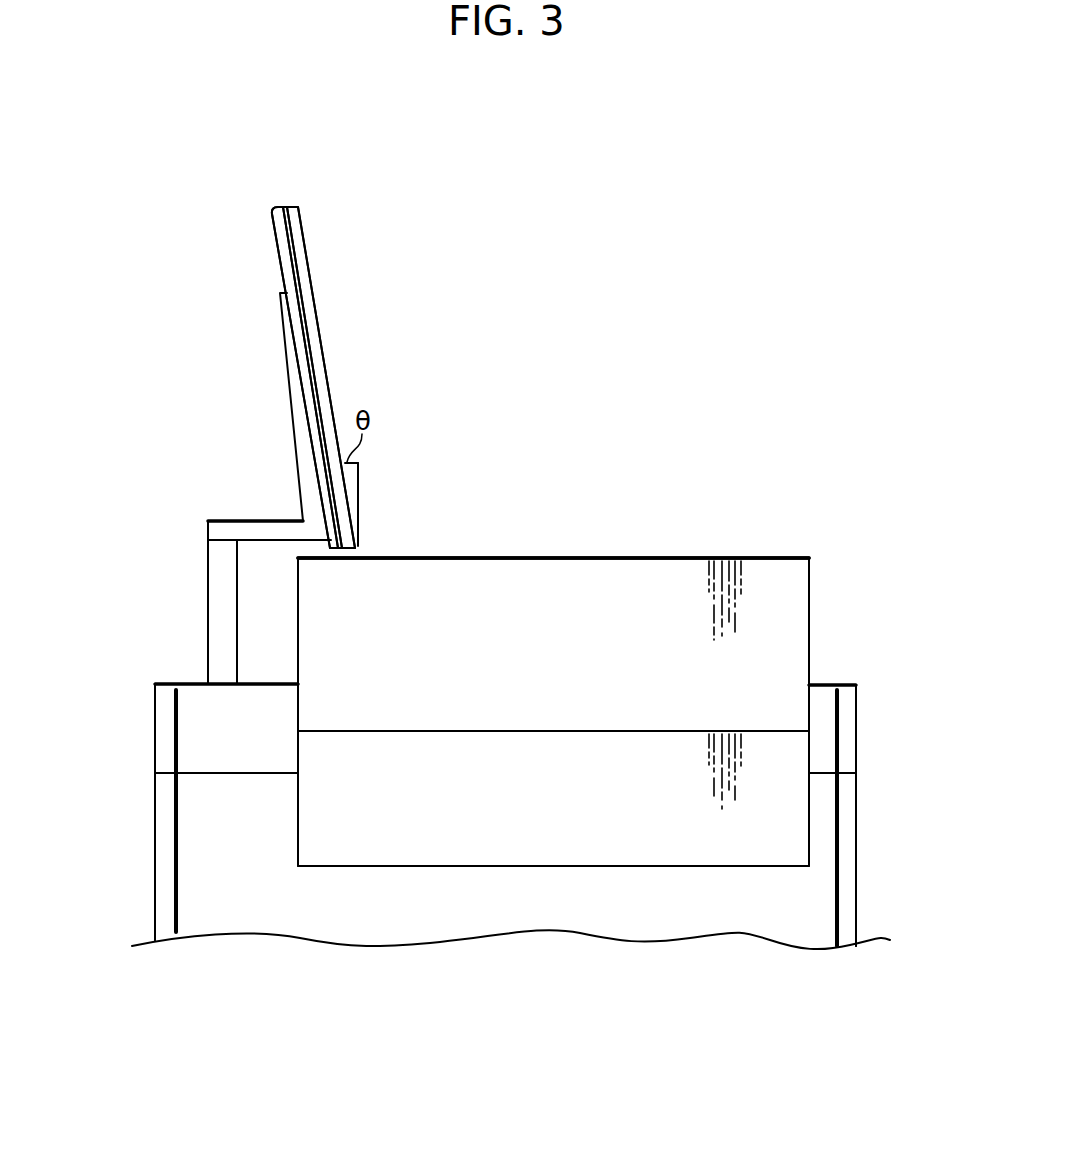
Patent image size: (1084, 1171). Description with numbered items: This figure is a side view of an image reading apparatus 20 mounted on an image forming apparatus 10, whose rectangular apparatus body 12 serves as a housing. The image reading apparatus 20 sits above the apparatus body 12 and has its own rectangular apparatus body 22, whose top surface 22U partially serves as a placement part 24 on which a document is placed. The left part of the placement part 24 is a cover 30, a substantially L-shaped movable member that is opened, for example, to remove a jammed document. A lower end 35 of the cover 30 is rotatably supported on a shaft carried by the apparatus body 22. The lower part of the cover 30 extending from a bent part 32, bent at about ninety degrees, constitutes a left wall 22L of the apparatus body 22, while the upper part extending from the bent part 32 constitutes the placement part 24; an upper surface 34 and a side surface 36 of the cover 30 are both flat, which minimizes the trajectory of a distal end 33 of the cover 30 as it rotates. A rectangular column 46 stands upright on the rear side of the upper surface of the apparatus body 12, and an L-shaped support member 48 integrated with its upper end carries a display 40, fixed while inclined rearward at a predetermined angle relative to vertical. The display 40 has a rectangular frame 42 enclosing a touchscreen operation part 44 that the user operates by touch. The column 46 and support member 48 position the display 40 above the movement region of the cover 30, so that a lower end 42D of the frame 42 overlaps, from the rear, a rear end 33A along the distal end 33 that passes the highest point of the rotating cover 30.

The image forming apparatus 10 is at (866, 896).
The apparatus body 12 is at (155, 884).
The image reading apparatus 20 is at (858, 682).
The apparatus body 22 is at (151, 680).
The top surface 22U is at (188, 682).
The left wall 22L is at (192, 733).
The placement part 24 is at (826, 682).
The cover 30 is at (812, 556).
The bent part 32 is at (515, 732).
The distal end 33 is at (686, 557).
The rear end 33A is at (298, 558).
The upper surface 34 is at (608, 590).
The lower end 35 is at (490, 867).
The side surface 36 is at (630, 835).
The display 40 is at (299, 207).
The frame 42 is at (292, 207).
The lower end 42D is at (350, 544).
The operation part 44 is at (321, 347).
The column 46 is at (208, 578).
The support member 48 is at (288, 382).